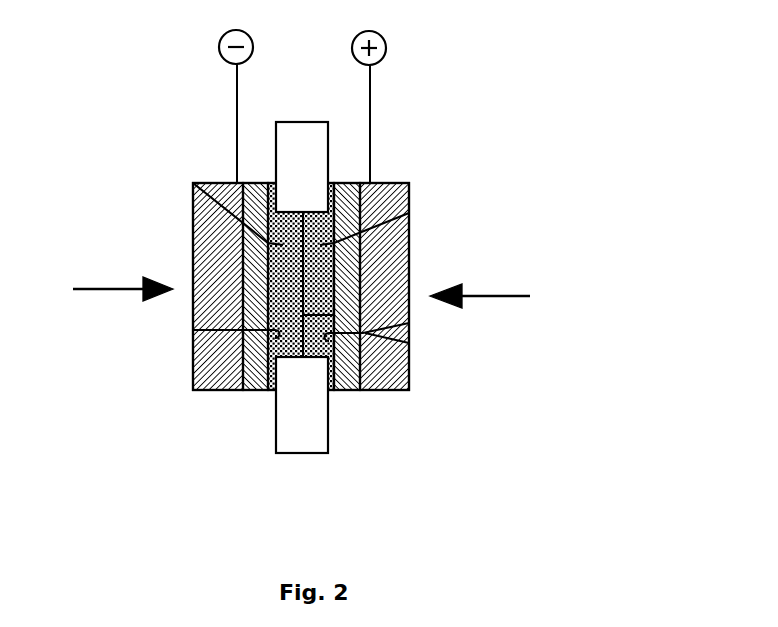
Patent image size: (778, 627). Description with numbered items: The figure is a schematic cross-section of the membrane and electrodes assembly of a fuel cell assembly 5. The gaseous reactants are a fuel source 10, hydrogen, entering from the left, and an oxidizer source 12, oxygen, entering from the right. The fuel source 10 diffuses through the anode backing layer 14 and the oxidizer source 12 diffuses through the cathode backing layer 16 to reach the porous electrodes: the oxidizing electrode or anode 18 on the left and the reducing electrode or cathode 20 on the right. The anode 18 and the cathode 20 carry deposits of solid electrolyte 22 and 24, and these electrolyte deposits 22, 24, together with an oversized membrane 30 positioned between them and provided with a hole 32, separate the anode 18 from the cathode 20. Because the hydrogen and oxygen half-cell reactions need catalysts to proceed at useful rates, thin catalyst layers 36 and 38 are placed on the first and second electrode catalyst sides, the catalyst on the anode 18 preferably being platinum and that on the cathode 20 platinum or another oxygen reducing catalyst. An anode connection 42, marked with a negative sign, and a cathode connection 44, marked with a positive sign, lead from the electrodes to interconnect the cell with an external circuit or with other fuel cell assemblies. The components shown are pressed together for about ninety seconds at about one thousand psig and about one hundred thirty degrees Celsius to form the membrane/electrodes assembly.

The fuel cell assembly 5 is at (98, 82).
The fuel source 10 is at (134, 285).
The oxidizer source 12 is at (485, 285).
The anode backing layer 14 is at (193, 345).
The cathode backing layer 16 is at (409, 345).
The anode 18 is at (253, 392).
The cathode 20 is at (348, 392).
The solid electrolyte deposit 22 is at (193, 183).
The solid electrolyte deposit 24 is at (409, 213).
The oversized membrane 30 is at (306, 463).
The hole 32 is at (409, 323).
The catalyst layer 36 is at (193, 330).
The catalyst layer 38 is at (409, 330).
The anode connection 42 is at (233, 98).
The cathode connection 44 is at (375, 98).